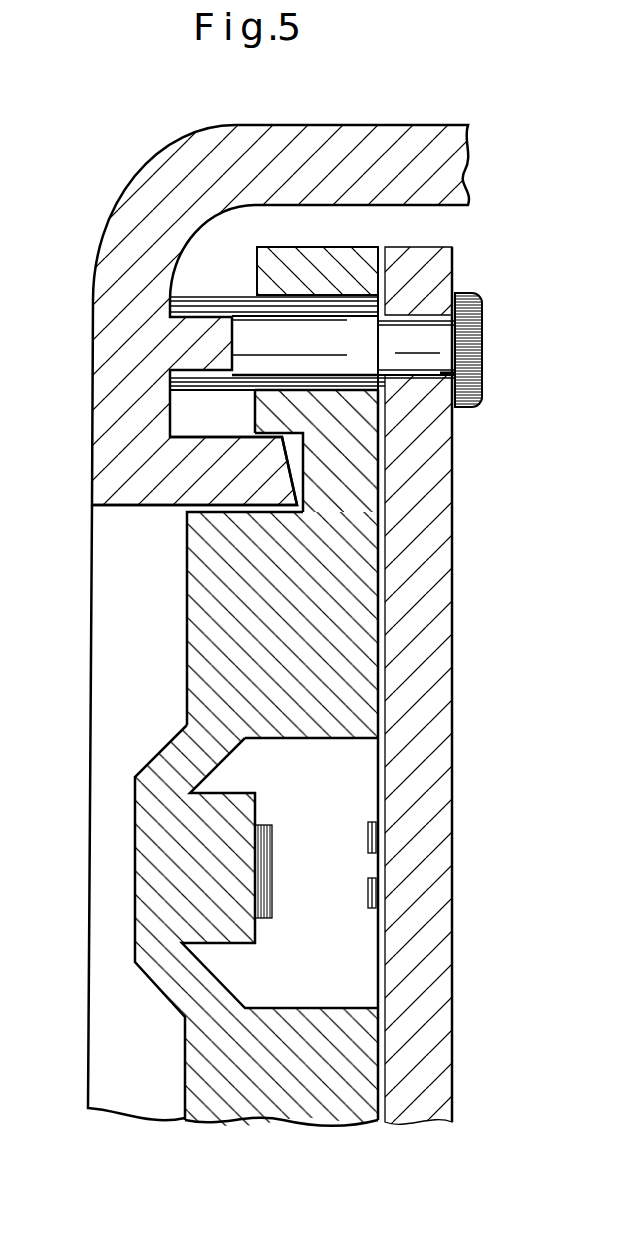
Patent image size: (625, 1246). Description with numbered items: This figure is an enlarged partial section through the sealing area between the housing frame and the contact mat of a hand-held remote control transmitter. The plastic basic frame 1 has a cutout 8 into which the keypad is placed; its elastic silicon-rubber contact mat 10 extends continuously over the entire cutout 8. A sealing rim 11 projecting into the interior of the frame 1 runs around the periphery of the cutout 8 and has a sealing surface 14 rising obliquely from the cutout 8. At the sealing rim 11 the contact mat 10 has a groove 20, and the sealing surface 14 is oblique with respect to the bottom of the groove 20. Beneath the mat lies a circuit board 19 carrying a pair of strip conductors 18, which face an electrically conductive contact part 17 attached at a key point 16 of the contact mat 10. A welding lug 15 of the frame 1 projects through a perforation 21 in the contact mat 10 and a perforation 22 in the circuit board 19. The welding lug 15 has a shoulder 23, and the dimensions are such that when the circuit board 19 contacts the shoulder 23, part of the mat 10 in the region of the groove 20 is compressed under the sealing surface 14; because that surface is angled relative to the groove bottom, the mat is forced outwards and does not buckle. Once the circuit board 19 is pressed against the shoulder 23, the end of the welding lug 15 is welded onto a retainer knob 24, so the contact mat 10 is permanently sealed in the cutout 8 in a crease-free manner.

The basic frame 1 is at (125, 331).
The cutout 8 is at (118, 578).
The contact mat 10 is at (225, 650).
The sealing rim 11 is at (195, 475).
The sealing surface 14 is at (292, 470).
The welding lug 15 is at (303, 314).
The key point 16 is at (165, 862).
The contact part 17 is at (273, 840).
The strip conductors 18 is at (375, 835).
The circuit board 19 is at (423, 995).
The groove 20 is at (300, 437).
The perforation 21 is at (170, 378).
The perforation 22 is at (457, 373).
The shoulder 23 is at (385, 343).
The retainer knob 24 is at (482, 350).